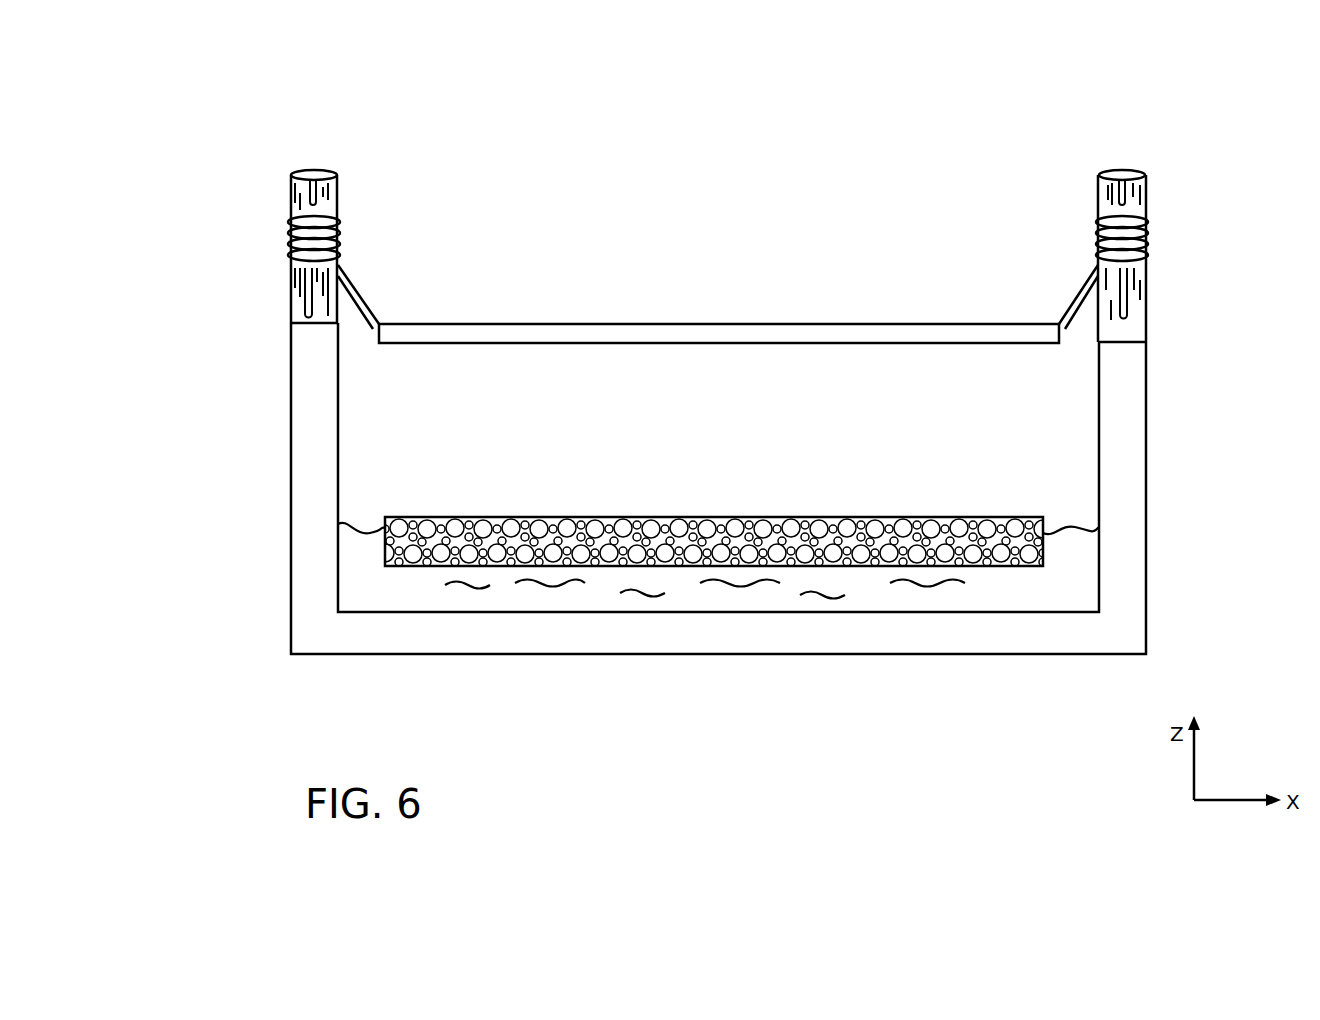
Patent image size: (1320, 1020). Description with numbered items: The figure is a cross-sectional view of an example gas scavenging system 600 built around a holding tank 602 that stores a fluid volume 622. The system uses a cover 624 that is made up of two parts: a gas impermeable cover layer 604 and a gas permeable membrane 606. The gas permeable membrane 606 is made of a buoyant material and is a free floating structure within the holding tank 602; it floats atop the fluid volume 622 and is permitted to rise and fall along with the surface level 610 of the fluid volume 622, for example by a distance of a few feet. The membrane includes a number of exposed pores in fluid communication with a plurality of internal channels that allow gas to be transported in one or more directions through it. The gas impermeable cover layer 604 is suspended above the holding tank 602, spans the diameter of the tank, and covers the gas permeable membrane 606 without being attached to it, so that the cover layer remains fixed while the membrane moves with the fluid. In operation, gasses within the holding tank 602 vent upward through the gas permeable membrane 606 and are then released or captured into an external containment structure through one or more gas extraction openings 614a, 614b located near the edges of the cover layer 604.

The gas scavenging system 600 is at (1192, 136).
The holding tank 602 is at (1146, 362).
The gas impermeable cover layer 604 is at (905, 324).
The gas permeable membrane 606 is at (830, 517).
The surface level 610 is at (1069, 547).
The gas extraction opening 614a is at (363, 355).
The gas extraction opening 614b is at (1075, 355).
The fluid volume 622 is at (472, 589).
The cover 624 is at (723, 282).